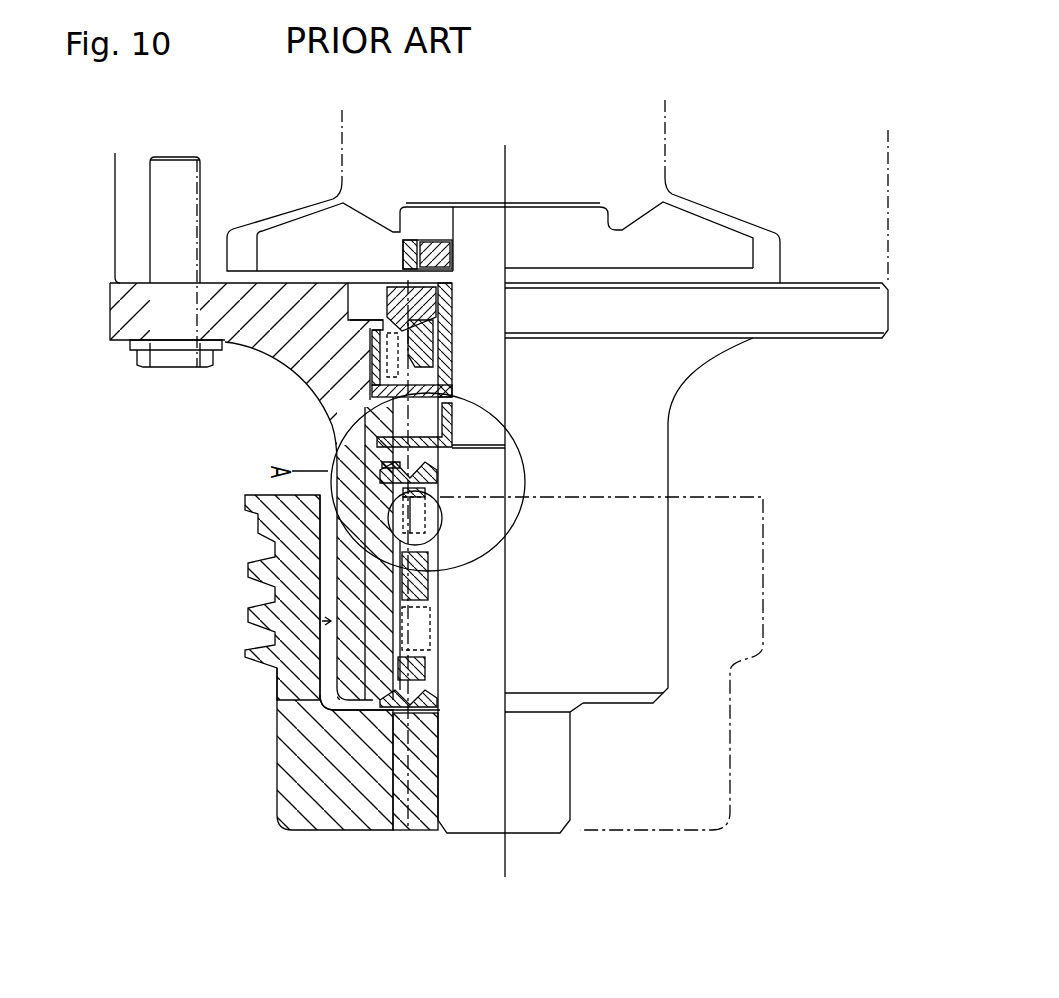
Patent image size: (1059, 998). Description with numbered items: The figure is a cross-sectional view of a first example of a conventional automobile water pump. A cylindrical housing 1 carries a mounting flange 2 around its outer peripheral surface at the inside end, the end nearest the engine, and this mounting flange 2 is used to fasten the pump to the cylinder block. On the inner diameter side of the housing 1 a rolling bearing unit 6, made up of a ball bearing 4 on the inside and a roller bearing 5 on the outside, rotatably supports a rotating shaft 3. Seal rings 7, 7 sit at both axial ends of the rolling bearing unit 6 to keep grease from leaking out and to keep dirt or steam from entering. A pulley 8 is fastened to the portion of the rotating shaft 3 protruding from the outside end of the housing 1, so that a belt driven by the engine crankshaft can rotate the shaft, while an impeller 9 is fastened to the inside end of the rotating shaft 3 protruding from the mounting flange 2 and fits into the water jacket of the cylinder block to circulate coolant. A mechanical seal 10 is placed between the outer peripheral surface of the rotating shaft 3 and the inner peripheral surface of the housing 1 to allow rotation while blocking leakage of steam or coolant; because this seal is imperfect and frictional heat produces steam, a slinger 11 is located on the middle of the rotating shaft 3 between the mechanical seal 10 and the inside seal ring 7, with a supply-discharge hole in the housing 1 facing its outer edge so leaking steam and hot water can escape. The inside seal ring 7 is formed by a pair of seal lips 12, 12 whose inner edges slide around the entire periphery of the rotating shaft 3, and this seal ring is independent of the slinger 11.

The cylindrical housing 1 is at (342, 383).
The mounting flange 2 is at (120, 312).
The rotating shaft 3 is at (463, 803).
The ball bearing 4 is at (397, 524).
The roller bearing 5 is at (398, 645).
The rolling bearing unit 6 is at (322, 621).
The seal ring 7 is at (397, 470).
The pulley 8 is at (305, 755).
The impeller 9 is at (298, 237).
The mechanical seal 10 is at (452, 338).
The slinger 11 is at (440, 423).
The seal lip 12 is at (437, 458).